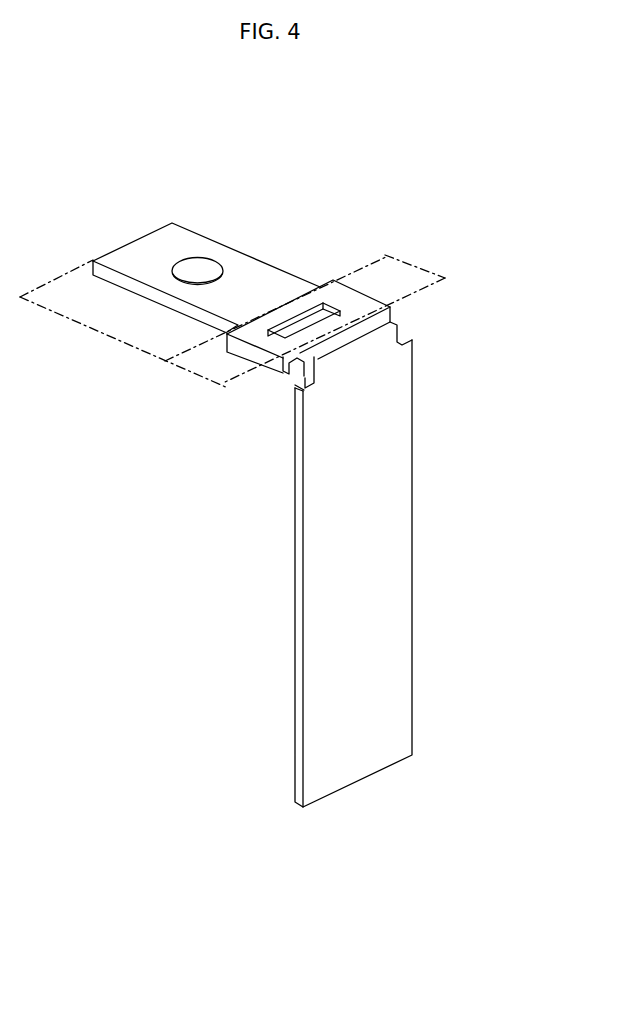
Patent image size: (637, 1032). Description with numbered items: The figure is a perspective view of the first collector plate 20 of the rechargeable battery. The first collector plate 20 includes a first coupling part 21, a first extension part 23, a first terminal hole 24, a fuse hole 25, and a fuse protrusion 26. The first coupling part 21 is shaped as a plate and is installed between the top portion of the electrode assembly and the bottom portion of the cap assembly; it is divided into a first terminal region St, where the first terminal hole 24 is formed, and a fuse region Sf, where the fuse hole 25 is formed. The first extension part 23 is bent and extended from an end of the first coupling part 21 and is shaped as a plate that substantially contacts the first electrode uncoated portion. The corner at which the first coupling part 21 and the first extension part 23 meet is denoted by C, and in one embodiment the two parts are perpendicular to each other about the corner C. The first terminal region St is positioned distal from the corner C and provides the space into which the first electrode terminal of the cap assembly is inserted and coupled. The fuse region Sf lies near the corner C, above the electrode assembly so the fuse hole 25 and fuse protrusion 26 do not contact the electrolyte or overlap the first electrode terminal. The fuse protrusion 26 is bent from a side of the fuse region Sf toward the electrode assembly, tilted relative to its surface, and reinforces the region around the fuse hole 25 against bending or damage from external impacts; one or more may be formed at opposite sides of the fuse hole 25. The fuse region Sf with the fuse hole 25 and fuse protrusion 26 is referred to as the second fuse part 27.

The first collector plate 20 is at (274, 490).
The first coupling part 21 is at (152, 247).
The first extension part 23 is at (382, 492).
The first terminal hole 24 is at (192, 262).
The fuse hole 25 is at (308, 318).
The fuse protrusion 26 is at (273, 368).
The second fuse part 27 is at (413, 267).
The corner C is at (355, 345).
The first terminal region st is at (70, 345).
The fuse region sf is at (180, 390).